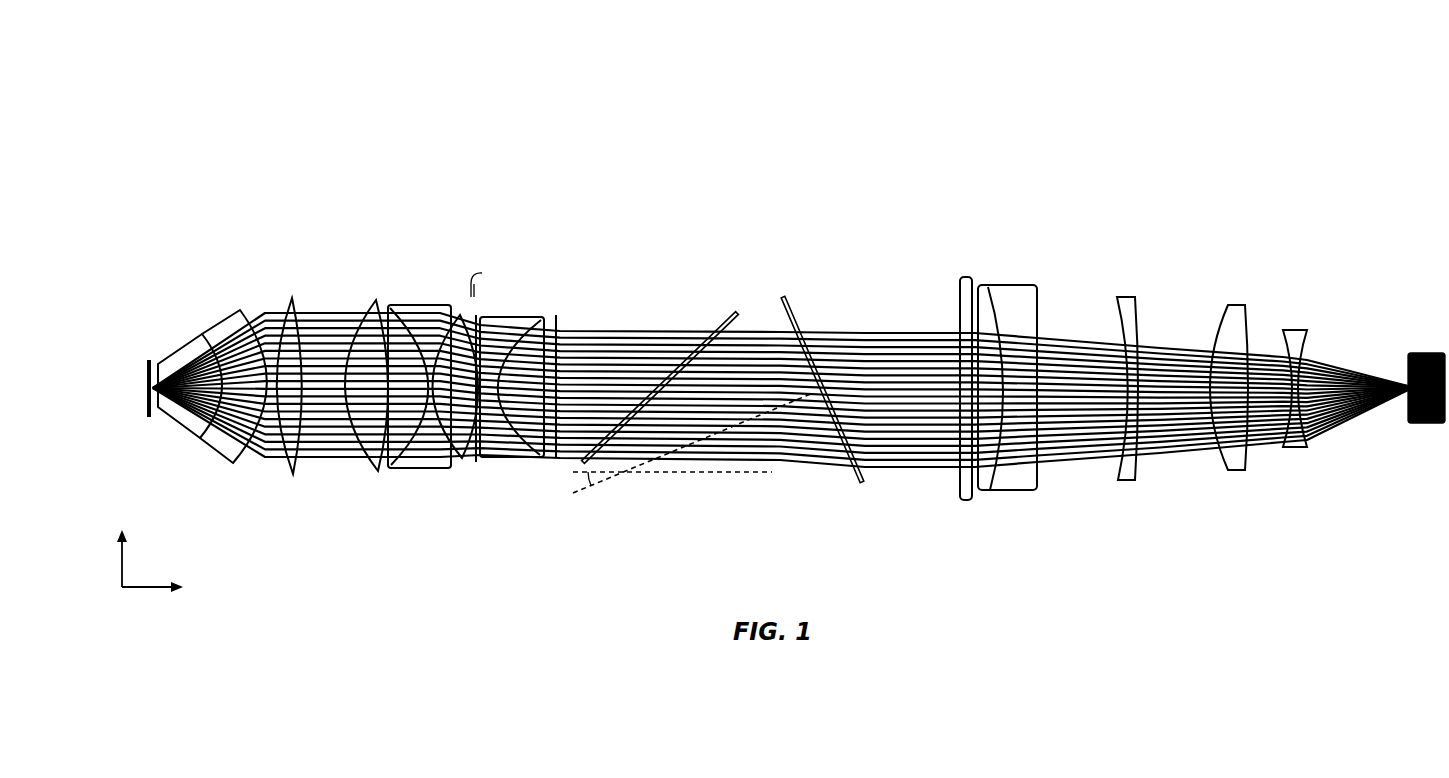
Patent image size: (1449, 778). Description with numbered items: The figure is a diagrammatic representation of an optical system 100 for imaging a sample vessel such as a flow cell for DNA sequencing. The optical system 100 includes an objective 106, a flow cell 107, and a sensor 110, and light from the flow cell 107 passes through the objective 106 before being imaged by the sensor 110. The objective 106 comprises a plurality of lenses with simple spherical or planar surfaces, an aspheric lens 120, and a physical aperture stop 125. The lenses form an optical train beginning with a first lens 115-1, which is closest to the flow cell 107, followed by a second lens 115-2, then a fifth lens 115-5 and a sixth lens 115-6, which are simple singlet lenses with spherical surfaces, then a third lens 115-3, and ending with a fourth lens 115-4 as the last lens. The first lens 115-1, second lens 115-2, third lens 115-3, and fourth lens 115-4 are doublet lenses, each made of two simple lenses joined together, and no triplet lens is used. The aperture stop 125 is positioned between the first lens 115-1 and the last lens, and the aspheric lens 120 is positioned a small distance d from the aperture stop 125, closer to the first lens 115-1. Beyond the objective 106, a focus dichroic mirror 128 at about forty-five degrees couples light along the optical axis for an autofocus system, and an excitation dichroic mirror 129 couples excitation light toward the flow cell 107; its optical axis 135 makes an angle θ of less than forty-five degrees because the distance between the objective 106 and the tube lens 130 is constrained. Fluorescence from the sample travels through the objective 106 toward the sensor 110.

The optical system 100 is at (1286, 106).
The objective 106 is at (158, 208).
The flow cell 107 is at (148, 417).
The sensor 110 is at (1411, 425).
The first lens 115-1 is at (159, 366).
The second lens 115-2 is at (220, 334).
The third lens 115-3 is at (396, 306).
The fourth lens 115-4 is at (542, 323).
The fifth lens 115-5 is at (293, 474).
The sixth lens 115-6 is at (378, 471).
The aspheric lens 120 is at (462, 458).
The aperture stop 125 is at (474, 463).
The focus dichroic mirror 128 is at (735, 315).
The excitation dichroic mirror 129 is at (858, 480).
The tube lens 130 is at (1305, 208).
The optical axis 135 is at (598, 481).